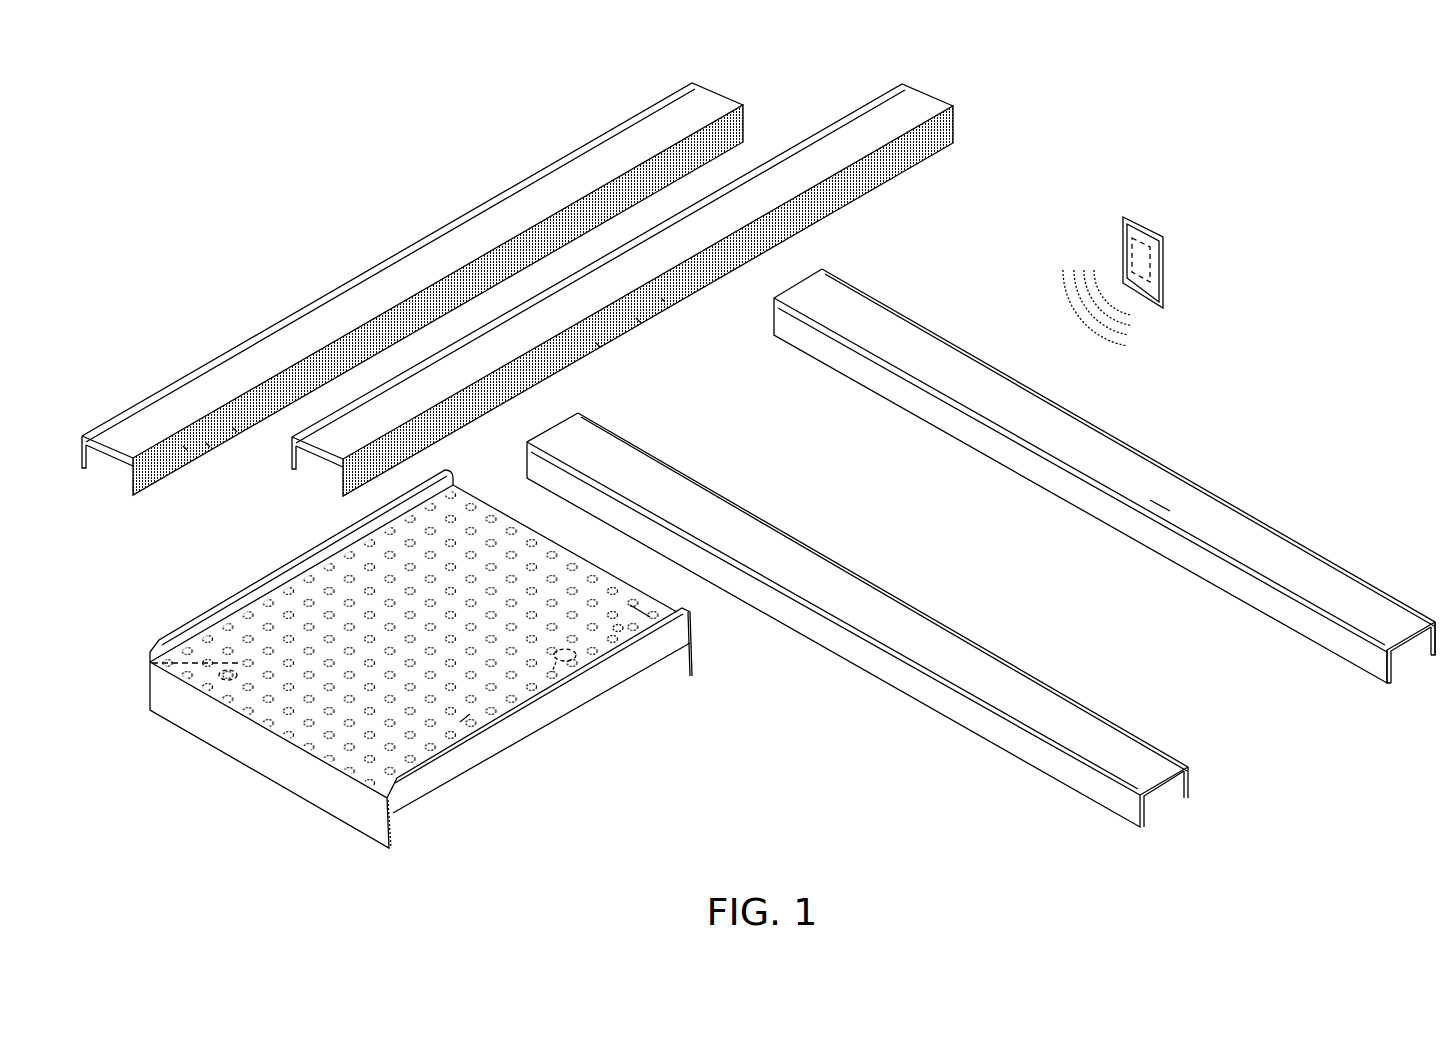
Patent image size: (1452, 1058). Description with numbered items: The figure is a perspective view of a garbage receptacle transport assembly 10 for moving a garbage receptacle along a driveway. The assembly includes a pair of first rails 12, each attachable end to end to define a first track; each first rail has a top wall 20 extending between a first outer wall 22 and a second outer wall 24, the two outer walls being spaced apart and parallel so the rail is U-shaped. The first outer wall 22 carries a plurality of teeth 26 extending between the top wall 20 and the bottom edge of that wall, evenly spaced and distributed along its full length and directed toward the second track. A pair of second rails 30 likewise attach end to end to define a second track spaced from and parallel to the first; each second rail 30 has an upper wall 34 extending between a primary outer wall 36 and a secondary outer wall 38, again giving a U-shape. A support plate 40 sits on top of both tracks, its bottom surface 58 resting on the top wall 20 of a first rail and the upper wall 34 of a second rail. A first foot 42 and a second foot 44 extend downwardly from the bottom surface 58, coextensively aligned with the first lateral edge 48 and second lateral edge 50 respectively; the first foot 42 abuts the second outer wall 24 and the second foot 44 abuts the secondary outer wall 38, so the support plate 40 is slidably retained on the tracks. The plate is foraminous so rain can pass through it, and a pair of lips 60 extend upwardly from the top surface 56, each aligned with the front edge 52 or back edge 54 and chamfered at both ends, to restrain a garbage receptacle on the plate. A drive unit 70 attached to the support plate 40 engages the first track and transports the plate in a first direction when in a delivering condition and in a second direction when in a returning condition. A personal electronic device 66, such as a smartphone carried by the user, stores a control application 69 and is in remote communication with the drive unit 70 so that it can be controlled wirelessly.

The garbage receptacle transport assembly 10 is at (222, 238).
The first rails 12 is at (626, 108).
The top wall 20 is at (372, 298).
The first outer wall 22 is at (170, 487).
The second outer wall 24 is at (82, 440).
The teeth 26 is at (235, 430).
The second rails 30 is at (1278, 500).
The upper wall 34 is at (1160, 493).
The primary outer wall 36 is at (1360, 653).
The secondary outer wall 38 is at (1443, 628).
The support plate 40 is at (160, 758).
The first foot 42 is at (322, 815).
The second foot 44 is at (693, 678).
The first lateral edge 48 is at (235, 730).
The second lateral edge 50 is at (640, 612).
The front edge 52 is at (580, 705).
The back edge 54 is at (238, 613).
The top surface 56 is at (468, 717).
The bottom surface 58 is at (152, 665).
The lips 60 is at (185, 630).
The personal electronic device 66 is at (1160, 228).
The control application 69 is at (1128, 260).
The drive unit 70 is at (622, 630).